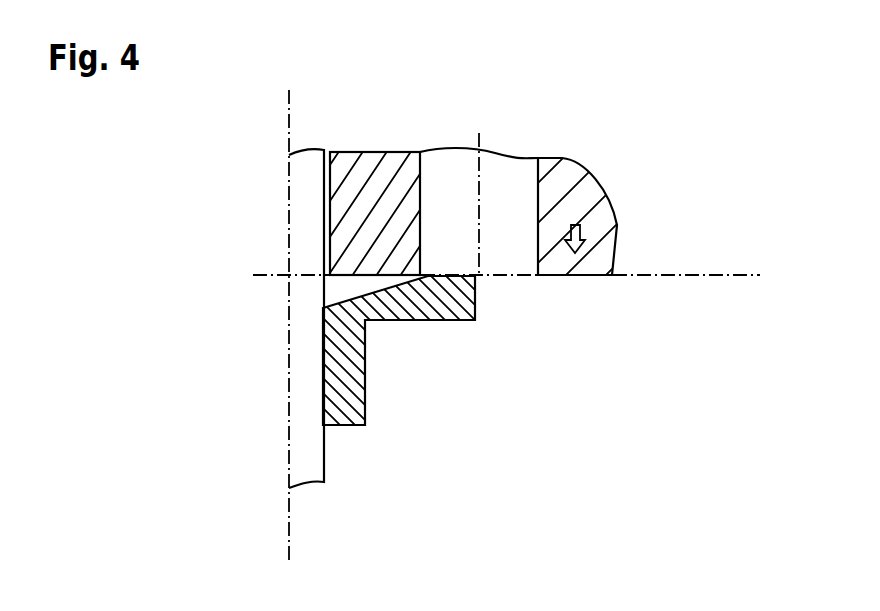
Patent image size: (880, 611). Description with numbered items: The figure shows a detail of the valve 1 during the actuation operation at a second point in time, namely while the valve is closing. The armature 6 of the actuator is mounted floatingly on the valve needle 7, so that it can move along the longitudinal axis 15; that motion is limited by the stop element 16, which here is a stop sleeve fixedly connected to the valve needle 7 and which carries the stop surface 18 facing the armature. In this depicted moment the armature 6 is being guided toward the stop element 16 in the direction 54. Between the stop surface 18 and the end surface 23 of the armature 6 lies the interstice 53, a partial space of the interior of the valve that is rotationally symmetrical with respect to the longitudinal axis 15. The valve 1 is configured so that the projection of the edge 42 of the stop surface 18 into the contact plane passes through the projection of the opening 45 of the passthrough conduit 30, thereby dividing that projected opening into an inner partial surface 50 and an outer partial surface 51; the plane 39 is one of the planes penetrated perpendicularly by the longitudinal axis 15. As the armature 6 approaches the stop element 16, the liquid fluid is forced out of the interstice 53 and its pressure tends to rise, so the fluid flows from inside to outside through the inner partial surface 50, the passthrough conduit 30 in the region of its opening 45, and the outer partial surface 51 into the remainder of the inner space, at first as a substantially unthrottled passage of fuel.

The valve 1 is at (681, 107).
The armature 6 is at (334, 190).
The valve needle 7 is at (300, 455).
The longitudinal axis 15 is at (288, 520).
The stop element 16 is at (357, 398).
The stop surface 18 is at (378, 295).
The end surface 23 is at (592, 278).
The passthrough conduit 30 is at (517, 176).
The plane 39 is at (718, 277).
The edge 42 is at (478, 278).
The opening 45 is at (425, 273).
The inner partial surface 50 is at (527, 276).
The outer partial surface 51 is at (500, 274).
The interstice 53 is at (340, 297).
The direction 54 is at (582, 238).